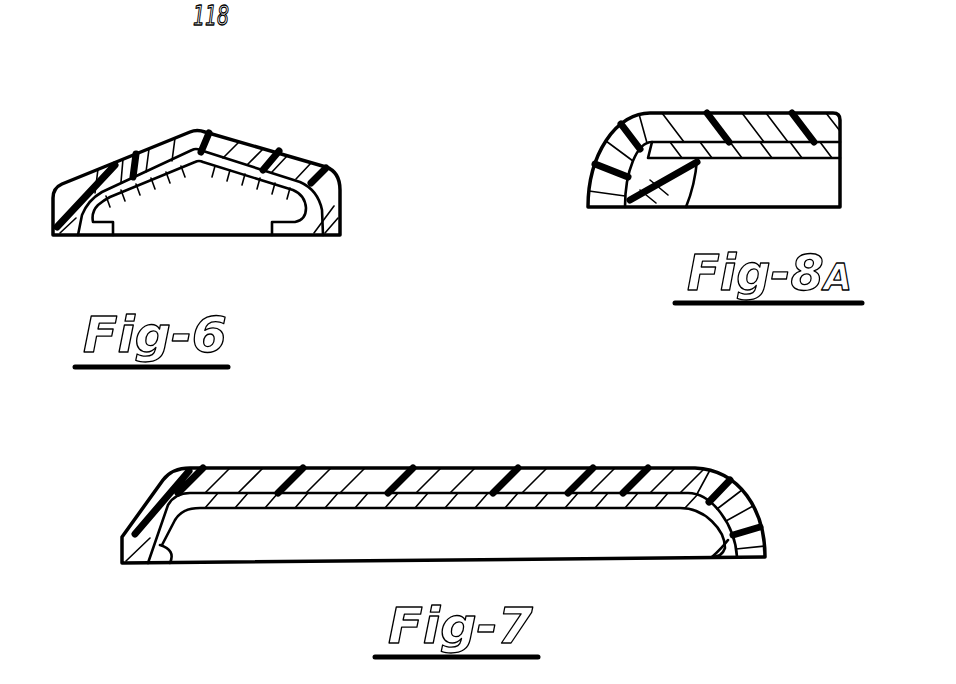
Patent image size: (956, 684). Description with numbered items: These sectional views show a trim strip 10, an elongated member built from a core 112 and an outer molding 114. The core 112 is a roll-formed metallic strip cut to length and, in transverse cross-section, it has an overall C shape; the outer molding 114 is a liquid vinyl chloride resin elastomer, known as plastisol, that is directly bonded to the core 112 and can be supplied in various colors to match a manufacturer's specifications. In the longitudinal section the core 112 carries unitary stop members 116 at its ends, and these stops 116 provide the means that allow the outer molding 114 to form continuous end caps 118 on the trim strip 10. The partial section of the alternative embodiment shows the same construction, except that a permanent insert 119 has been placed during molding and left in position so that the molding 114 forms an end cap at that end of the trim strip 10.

In FIG. 6, the trim strip 10 is at (300, 118).
In FIG. 7, the trim strip 10 is at (636, 384).
In FIG. 8A, the trim strip 10 is at (795, 80).
In FIG. 6, the core 112 is at (248, 200).
In FIG. 7, the core 112 is at (580, 515).
In FIG. 8A, the core 112 is at (818, 165).
In FIG. 6, the outer molding 114 is at (297, 175).
In FIG. 7, the outer molding 114 is at (608, 475).
In FIG. 8A, the outer molding 114 is at (697, 122).
In FIG. 7, the stop members 116 is at (165, 565).
In FIG. 7, the end caps 118 is at (152, 502).
In FIG. 8A, the end caps 118 is at (607, 145).
In FIG. 8A, the permanent insert 119 is at (667, 193).